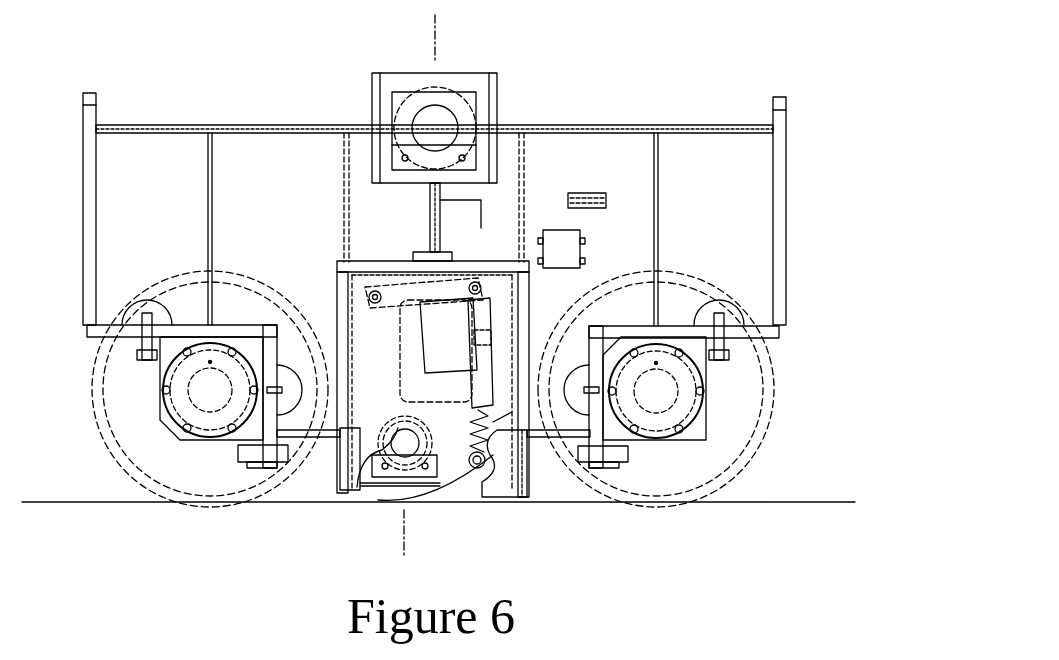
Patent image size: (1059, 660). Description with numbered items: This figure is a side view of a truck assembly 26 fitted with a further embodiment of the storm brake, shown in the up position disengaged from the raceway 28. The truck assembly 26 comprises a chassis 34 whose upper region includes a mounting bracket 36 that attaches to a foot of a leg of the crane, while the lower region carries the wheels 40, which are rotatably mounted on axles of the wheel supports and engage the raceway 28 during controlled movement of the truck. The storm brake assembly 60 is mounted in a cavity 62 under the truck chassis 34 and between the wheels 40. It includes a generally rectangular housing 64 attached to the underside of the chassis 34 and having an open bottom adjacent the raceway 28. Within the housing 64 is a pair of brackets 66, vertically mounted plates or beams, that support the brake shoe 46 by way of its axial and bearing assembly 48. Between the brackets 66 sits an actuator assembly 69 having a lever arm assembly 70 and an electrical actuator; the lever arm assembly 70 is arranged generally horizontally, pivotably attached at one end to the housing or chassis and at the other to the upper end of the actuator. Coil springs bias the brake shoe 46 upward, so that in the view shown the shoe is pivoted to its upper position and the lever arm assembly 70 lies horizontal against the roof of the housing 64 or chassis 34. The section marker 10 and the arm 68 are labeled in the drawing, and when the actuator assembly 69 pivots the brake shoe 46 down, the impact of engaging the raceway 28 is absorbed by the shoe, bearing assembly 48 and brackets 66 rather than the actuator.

The section line 10 is at (437, 28).
The truck assembly 26 is at (628, 58).
The raceway 28 is at (783, 505).
The chassis 34 is at (130, 216).
The mounting bracket 36 is at (500, 100).
The wheels 40 is at (145, 456).
The brake shoe 46 is at (460, 485).
The axial and bearing assembly 48 is at (405, 455).
The storm brake assembly 60 is at (512, 280).
The cavity 62 is at (385, 272).
The housing 64 is at (345, 470).
The brackets 66 is at (358, 337).
The pivot arm 68 is at (366, 430).
The actuator assembly 69 is at (432, 354).
The lever arm assembly 70 is at (445, 290).